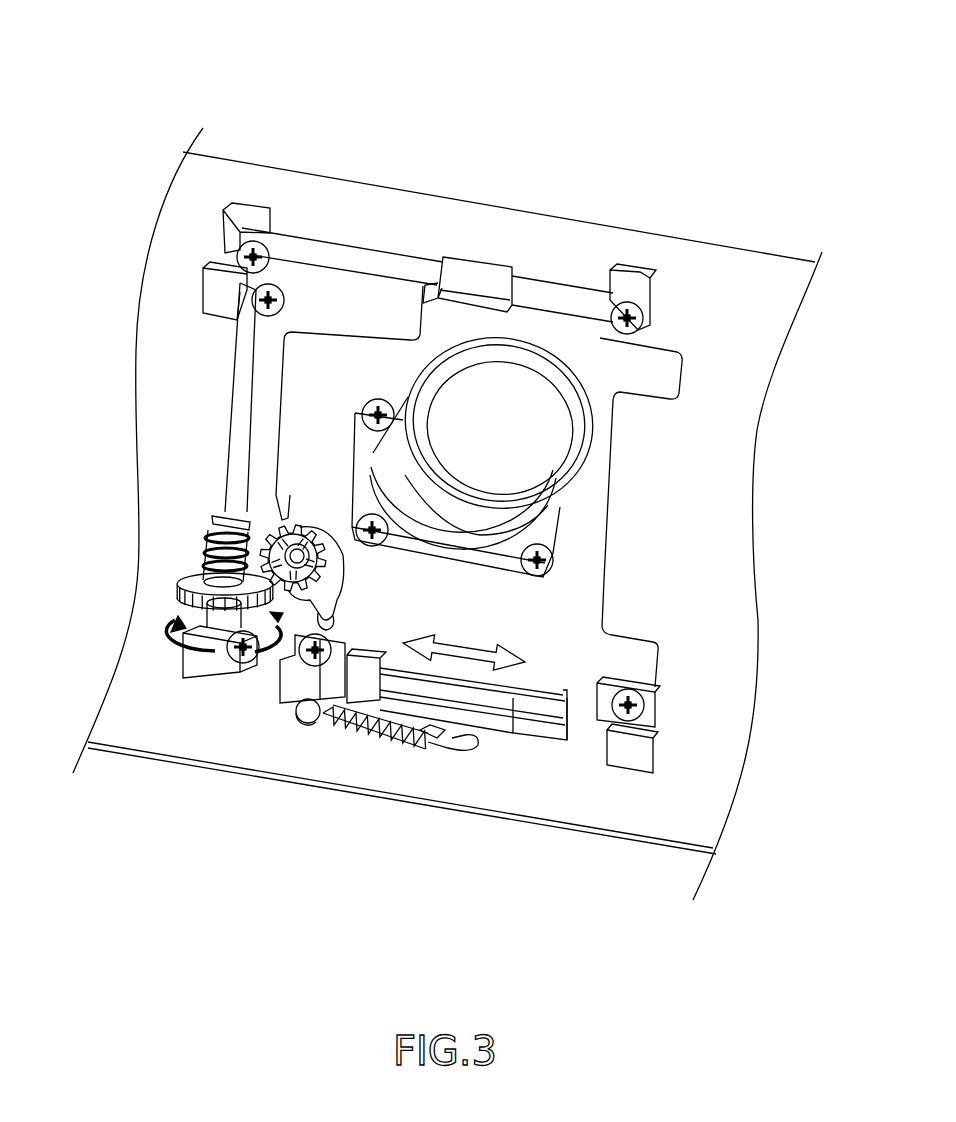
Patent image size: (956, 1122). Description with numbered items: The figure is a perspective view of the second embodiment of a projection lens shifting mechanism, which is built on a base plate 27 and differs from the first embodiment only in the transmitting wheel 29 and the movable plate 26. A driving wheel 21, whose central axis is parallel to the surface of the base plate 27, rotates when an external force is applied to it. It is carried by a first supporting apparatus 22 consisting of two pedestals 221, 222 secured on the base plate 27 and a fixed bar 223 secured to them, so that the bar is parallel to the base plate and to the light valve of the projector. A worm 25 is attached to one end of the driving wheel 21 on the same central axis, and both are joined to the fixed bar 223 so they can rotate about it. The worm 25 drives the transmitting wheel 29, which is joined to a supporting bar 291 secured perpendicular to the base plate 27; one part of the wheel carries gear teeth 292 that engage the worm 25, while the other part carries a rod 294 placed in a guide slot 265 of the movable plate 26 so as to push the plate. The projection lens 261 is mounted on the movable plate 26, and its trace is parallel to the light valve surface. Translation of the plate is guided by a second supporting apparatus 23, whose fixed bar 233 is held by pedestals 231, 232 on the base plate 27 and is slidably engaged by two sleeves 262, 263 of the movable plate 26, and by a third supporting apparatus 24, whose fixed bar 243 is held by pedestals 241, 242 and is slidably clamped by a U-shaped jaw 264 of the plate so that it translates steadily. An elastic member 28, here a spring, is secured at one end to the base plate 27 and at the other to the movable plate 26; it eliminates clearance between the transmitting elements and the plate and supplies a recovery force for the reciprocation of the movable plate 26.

The driving wheel 21 is at (175, 627).
The first supporting apparatus 22 is at (169, 393).
The pedestal 221 is at (186, 672).
The pedestal 222 is at (208, 290).
The fixed bar 223 is at (240, 372).
The second supporting apparatus 23 is at (524, 786).
The pedestal 231 is at (280, 693).
The pedestal 232 is at (636, 746).
The fixed bar 233 is at (520, 705).
The third supporting apparatus 24 is at (498, 189).
The pedestal 241 is at (253, 222).
The pedestal 242 is at (643, 275).
The fixed bar 243 is at (580, 293).
The worm 25 is at (210, 537).
The movable plate 26 is at (325, 720).
The projection lens 261 is at (578, 462).
The sleeve 262 is at (355, 738).
The sleeve 263 is at (615, 765).
The U-shaped jaw 264 is at (473, 270).
The guide slot 265 is at (445, 553).
The base plate 27 is at (480, 790).
The elastic member 28 is at (398, 738).
The transmitting wheel 29 is at (293, 526).
The supporting bar 291 is at (308, 552).
The gear teeth 292 is at (255, 513).
The rod 294 is at (350, 648).